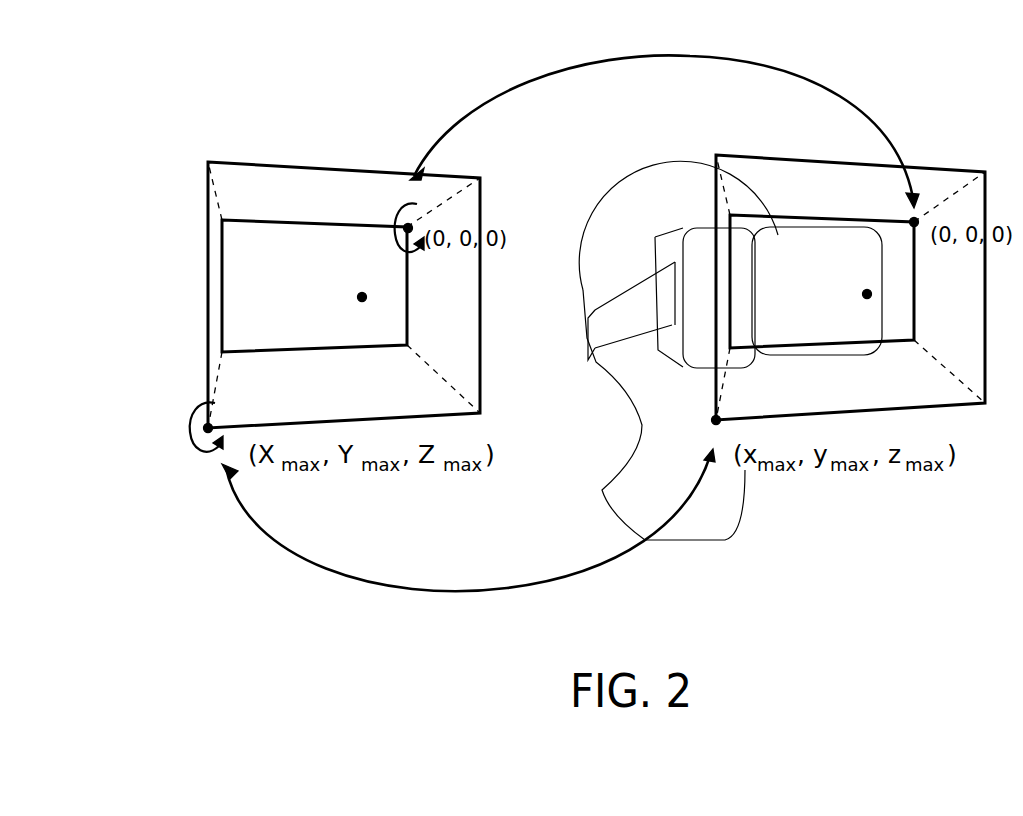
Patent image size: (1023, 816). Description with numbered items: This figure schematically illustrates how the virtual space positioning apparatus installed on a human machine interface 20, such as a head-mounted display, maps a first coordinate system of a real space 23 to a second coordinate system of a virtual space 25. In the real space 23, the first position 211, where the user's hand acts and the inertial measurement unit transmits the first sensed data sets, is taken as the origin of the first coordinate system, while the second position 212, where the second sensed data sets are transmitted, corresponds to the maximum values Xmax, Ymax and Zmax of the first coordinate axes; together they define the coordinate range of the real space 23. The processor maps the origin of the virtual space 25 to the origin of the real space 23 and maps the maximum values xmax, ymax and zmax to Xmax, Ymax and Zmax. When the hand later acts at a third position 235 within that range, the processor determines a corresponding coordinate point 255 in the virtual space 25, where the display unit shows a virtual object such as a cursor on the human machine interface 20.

The human machine interface (HMI) 20 is at (707, 228).
The real space 23 is at (347, 168).
The virtual space 25 is at (843, 160).
The first position 211 is at (398, 240).
The second position 212 is at (213, 420).
The third position 235 is at (359, 302).
The coordinate point 255 is at (864, 298).